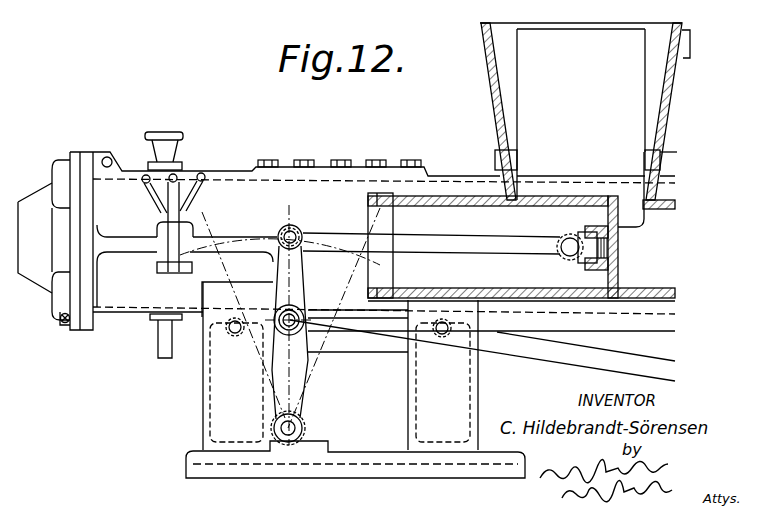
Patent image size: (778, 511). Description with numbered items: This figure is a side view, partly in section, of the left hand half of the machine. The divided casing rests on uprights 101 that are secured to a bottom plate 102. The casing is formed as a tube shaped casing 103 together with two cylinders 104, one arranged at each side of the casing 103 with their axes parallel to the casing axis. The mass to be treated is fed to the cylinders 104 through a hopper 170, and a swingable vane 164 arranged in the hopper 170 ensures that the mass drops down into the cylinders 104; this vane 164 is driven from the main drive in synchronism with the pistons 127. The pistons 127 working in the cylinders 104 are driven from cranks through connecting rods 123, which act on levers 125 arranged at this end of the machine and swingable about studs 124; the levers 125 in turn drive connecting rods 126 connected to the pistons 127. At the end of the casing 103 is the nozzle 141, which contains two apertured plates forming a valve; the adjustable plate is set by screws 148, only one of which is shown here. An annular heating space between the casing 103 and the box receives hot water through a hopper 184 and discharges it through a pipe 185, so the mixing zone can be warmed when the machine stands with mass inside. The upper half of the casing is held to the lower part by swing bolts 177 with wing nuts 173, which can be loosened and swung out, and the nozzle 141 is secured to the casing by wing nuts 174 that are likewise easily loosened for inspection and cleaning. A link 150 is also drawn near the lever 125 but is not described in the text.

The uprights 101 is at (340, 366).
The bottom plate 102 is at (371, 456).
The tube shaped casing 103 is at (372, 252).
The cylinders 104 is at (648, 200).
The connecting rods 123 is at (508, 330).
The studs 124 is at (300, 422).
The levers 125 is at (302, 272).
The connecting rods 126 is at (455, 244).
The pistons 127 is at (521, 245).
The nozzle 141 is at (39, 238).
The screws 148 is at (65, 326).
The link 150 is at (328, 333).
The swingable vane 164 is at (581, 111).
The hopper 170 is at (665, 28).
The wing nuts 173 is at (192, 176).
The wing nuts 174 is at (58, 160).
The swing bolts 177 is at (168, 240).
The hopper 184 is at (170, 126).
The pipe 185 is at (162, 358).